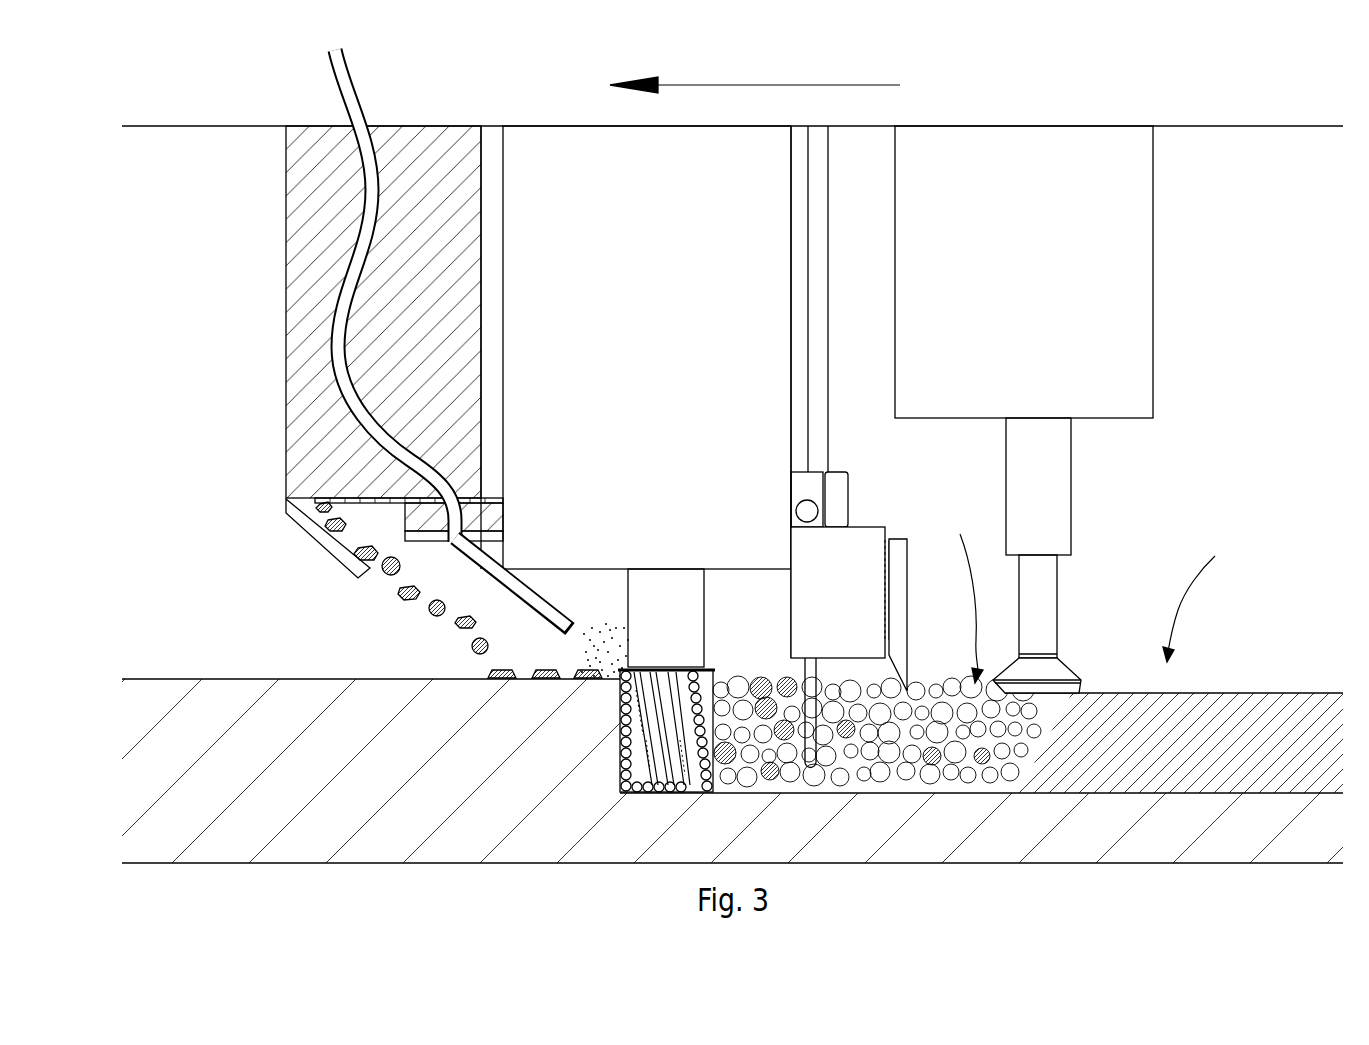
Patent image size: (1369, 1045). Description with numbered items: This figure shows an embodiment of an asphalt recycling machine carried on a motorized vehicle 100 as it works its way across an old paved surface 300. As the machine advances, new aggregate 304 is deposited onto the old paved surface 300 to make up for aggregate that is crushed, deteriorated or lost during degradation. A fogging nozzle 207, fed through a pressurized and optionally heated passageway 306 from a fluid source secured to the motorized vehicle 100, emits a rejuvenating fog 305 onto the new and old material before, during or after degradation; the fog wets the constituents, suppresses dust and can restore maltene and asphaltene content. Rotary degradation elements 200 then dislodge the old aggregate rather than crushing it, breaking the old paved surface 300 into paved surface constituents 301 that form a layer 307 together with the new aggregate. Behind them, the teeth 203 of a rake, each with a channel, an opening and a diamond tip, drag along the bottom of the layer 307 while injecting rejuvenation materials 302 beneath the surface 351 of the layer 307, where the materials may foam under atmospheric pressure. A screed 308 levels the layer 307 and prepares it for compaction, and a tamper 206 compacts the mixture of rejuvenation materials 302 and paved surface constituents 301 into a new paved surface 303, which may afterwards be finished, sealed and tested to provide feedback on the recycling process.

The motorized vehicle 100 is at (526, 110).
The rotary degradation elements 200 is at (632, 796).
The teeth 203 is at (851, 760).
The tamper 206 is at (1057, 678).
The fogging nozzle 207 is at (558, 620).
The old paved surface 300 is at (326, 771).
The paved surface constituents 301 is at (766, 655).
The rejuvenation materials 302 is at (933, 690).
The new paved surface 303 is at (1199, 596).
The new aggregate 304 is at (405, 596).
The rejuvenating fog 305 is at (755, 85).
The passageway 306 is at (430, 462).
The layer 307 is at (1004, 540).
The screed 308 is at (903, 538).
The surface 351 is at (962, 596).